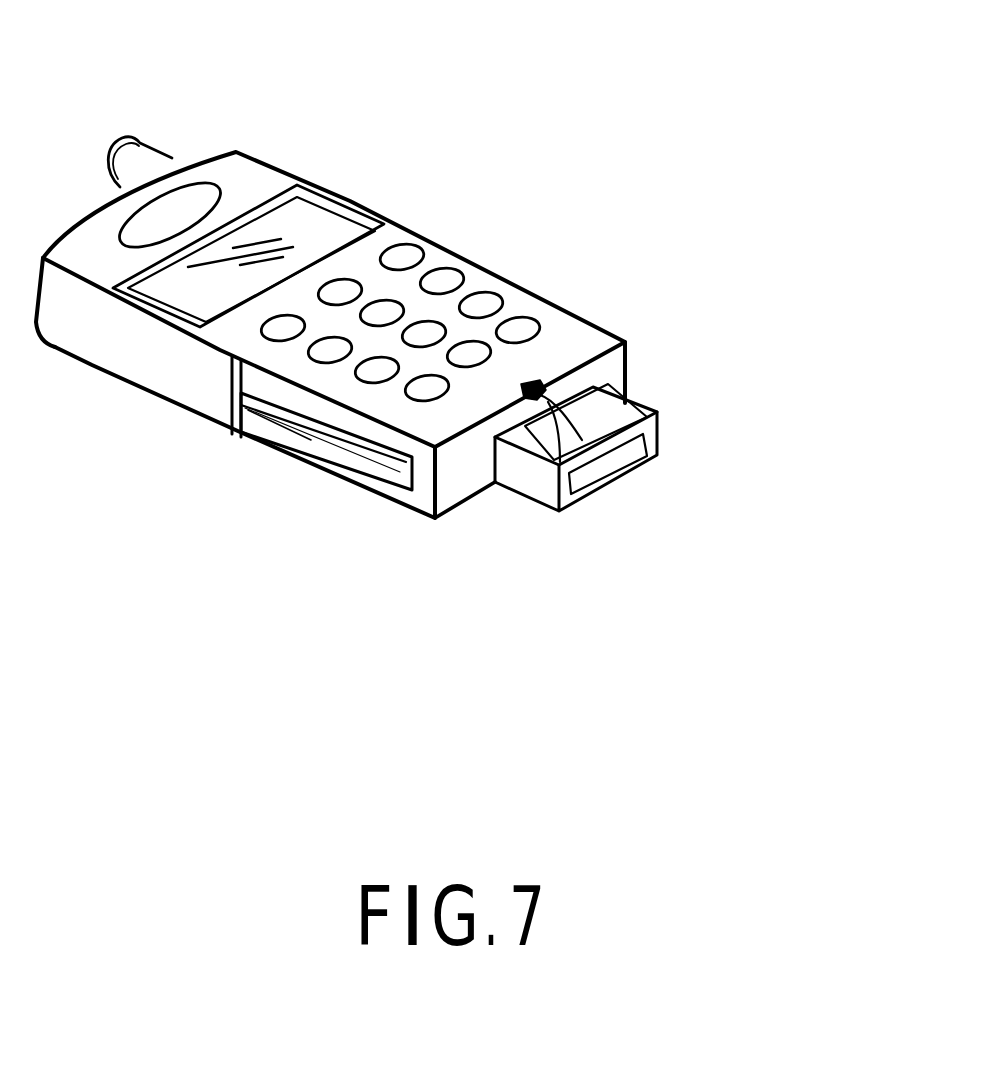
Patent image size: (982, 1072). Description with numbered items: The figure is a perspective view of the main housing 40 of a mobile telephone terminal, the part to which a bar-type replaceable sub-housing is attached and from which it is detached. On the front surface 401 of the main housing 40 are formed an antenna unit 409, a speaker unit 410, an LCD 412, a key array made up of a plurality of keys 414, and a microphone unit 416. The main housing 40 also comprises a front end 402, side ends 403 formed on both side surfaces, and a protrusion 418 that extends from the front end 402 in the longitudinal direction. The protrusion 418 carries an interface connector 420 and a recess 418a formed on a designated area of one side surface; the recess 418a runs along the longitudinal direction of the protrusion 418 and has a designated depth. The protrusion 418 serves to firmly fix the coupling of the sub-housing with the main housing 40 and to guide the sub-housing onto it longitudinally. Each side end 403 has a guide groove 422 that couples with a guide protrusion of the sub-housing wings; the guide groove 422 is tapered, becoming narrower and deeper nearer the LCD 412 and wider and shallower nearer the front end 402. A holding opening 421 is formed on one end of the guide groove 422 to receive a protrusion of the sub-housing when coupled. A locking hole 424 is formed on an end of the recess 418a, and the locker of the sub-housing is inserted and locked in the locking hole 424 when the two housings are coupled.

The main housing 40 is at (506, 260).
The front surface 401 is at (250, 178).
The front end 402 is at (468, 480).
The side end 403 is at (300, 450).
The antenna unit 409 is at (137, 137).
The speaker unit 410 is at (170, 208).
The LCD 412 is at (312, 227).
The keys 414 is at (402, 262).
The microphone unit 416 is at (543, 383).
The protrusion 418 is at (650, 400).
The recess 418a is at (572, 368).
The interface connector 420 is at (660, 441).
The holding opening 421 is at (250, 440).
The guide groove 422 is at (350, 483).
The locking hole 424 is at (572, 460).